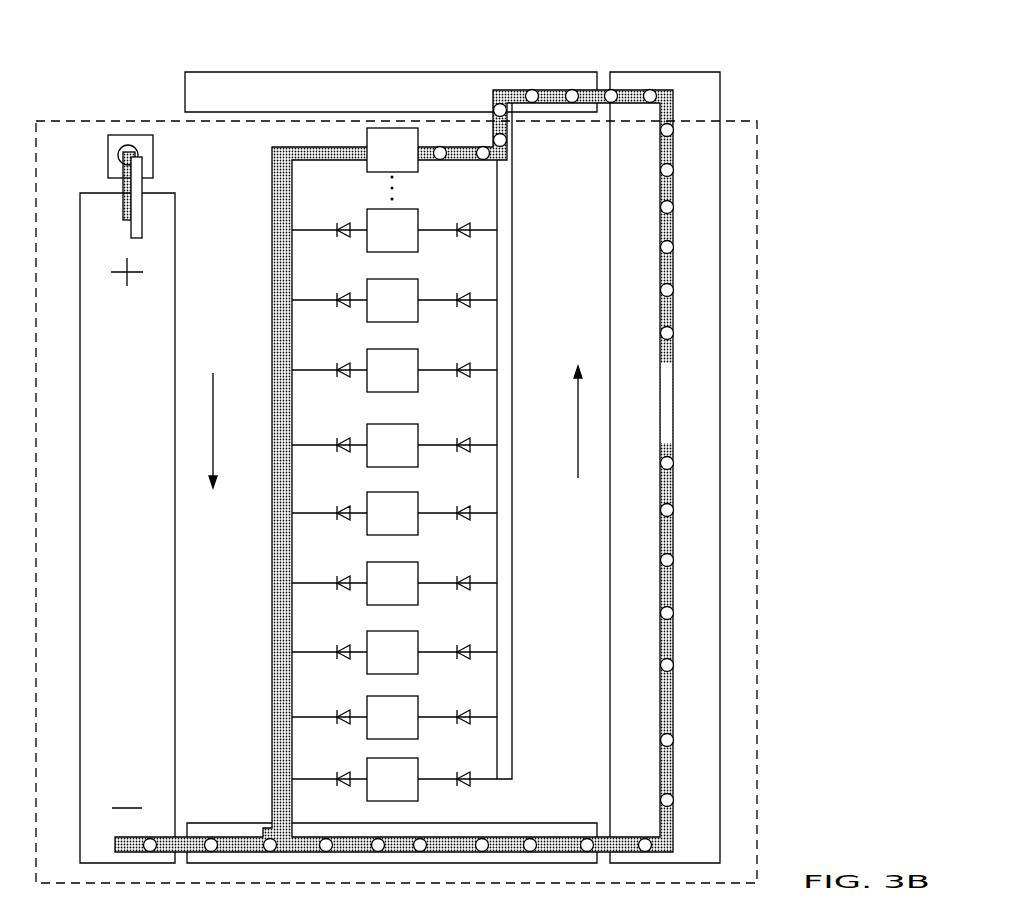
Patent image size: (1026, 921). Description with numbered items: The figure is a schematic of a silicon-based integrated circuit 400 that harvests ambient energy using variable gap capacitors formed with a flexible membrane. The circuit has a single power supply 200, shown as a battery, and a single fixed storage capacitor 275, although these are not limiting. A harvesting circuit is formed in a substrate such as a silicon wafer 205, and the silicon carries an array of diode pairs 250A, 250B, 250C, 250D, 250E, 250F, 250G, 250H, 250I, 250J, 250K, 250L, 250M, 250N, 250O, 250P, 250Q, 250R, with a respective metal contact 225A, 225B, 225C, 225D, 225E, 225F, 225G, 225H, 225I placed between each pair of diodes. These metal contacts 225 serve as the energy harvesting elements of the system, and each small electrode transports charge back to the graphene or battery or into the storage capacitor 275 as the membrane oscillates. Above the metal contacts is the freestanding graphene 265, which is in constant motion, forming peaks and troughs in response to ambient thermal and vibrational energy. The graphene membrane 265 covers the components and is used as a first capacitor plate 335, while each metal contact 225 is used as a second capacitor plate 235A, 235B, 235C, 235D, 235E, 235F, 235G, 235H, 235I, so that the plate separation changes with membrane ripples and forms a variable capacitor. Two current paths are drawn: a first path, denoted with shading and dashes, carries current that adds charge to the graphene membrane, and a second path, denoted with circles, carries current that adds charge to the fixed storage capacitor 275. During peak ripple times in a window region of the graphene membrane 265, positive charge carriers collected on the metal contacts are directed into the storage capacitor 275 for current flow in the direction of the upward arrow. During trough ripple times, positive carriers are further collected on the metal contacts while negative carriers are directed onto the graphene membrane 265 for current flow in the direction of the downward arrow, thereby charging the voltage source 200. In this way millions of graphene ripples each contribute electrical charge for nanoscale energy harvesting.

The power supply 200 is at (145, 451).
The silicon wafer 205 is at (508, 813).
The metal contact 225 is at (392, 150).
The metal contact 225A is at (434, 200).
The metal contact 225B is at (434, 270).
The metal contact 225C is at (434, 340).
The metal contact 225D is at (434, 415).
The metal contact 225E is at (434, 483).
The metal contact 225F is at (434, 553).
The metal contact 225G is at (434, 622).
The metal contact 225H is at (434, 687).
The metal contact 225I is at (434, 749).
The second capacitor plate 235A is at (420, 218).
The second capacitor plate 235B is at (420, 288).
The second capacitor plate 235C is at (420, 358).
The second capacitor plate 235D is at (420, 433).
The second capacitor plate 235E is at (420, 501).
The second capacitor plate 235F is at (420, 571).
The second capacitor plate 235G is at (420, 640).
The second capacitor plate 235H is at (420, 705).
The second capacitor plate 235I is at (416, 767).
The diode 250A is at (346, 224).
The diode 250B is at (471, 228).
The diode 250C is at (346, 294).
The diode 250D is at (471, 298).
The diode 250E is at (346, 364).
The diode 250F is at (471, 368).
The diode 250G is at (346, 439).
The diode 250H is at (471, 443).
The diode 250I is at (346, 507).
The diode 250J is at (471, 511).
The diode 250K is at (346, 577).
The diode 250L is at (471, 581).
The diode 250M is at (346, 646).
The diode 250N is at (471, 650).
The diode 250O is at (346, 711).
The diode 250P is at (471, 715).
The diode 250Q is at (346, 773).
The diode 250R is at (471, 777).
The freestanding graphene membrane 265 is at (389, 461).
The first capacitor plate 335 is at (58, 120).
The storage capacitor 275 is at (681, 441).
The silicon-based integrated circuit 400 is at (630, 48).